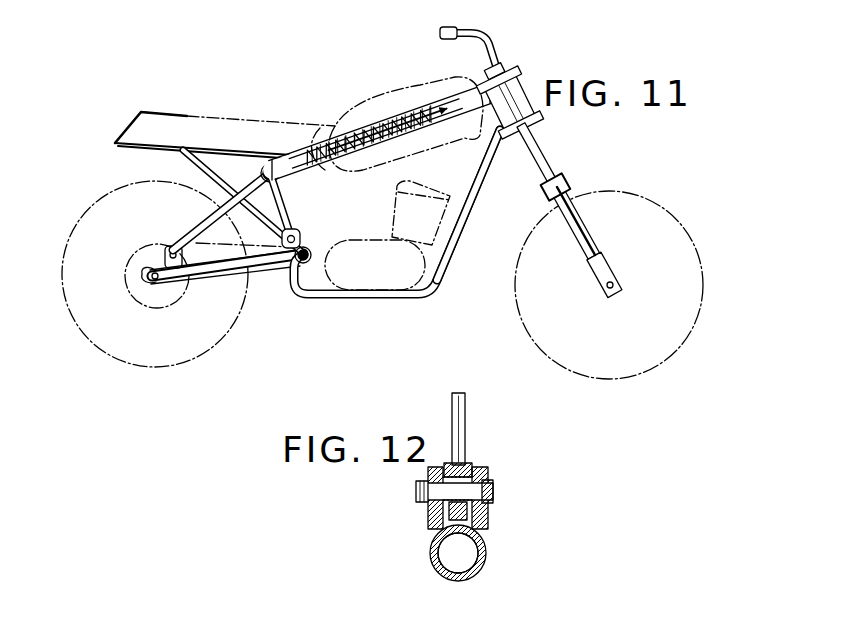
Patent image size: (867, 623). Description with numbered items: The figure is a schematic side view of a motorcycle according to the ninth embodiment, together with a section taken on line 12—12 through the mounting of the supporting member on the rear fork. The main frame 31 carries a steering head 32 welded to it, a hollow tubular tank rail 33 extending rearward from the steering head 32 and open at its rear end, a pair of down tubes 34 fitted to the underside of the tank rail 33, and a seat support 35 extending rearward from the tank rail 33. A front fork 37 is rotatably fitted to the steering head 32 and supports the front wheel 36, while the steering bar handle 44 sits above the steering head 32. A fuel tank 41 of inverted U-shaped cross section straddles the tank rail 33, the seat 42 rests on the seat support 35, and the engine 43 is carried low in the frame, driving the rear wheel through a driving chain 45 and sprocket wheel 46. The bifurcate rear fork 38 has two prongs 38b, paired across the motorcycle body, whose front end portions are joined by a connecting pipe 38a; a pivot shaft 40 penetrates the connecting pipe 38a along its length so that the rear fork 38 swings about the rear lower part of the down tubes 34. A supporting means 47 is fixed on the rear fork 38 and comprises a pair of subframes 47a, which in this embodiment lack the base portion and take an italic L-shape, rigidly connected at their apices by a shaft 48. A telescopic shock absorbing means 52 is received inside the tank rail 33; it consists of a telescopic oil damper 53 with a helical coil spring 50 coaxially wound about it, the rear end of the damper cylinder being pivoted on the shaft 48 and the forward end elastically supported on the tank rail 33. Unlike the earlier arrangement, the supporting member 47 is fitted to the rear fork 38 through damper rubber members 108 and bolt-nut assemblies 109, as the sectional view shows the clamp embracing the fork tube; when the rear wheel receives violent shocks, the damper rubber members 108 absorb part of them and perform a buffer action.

In FIG. 11, the frame 12 is at (172, 240).
In FIG. 11, the main frame 31 is at (436, 286).
In FIG. 11, the steering head 32 is at (512, 136).
In FIG. 11, the tank rail 33 is at (457, 108).
In FIG. 11, the down tubes 34 is at (451, 250).
In FIG. 11, the seat support 35 is at (160, 157).
In FIG. 11, the front wheel 36 is at (690, 335).
In FIG. 11, the front fork 37 is at (594, 239).
In FIG. 11, the rear fork 38 is at (224, 282).
In FIG. 12, the rear fork 38 is at (433, 543).
In FIG. 11, the connecting pipe 38a is at (311, 256).
In FIG. 11, the prongs 38b is at (262, 263).
In FIG. 12, the prongs 38b is at (478, 566).
In FIG. 11, the pivot shaft 40 is at (322, 233).
In FIG. 11, the fuel tank 41 is at (350, 133).
In FIG. 11, the seat 42 is at (192, 116).
In FIG. 11, the engine 43 is at (402, 290).
In FIG. 11, the steering bar handle 44 is at (492, 44).
In FIG. 11, the driving chain 45 is at (165, 306).
In FIG. 11, the sprocket wheel 46 is at (128, 280).
In FIG. 11, the supporting means 47 is at (207, 217).
In FIG. 12, the supporting means 47 is at (470, 448).
In FIG. 11, the triangular subframes 47a is at (288, 215).
In FIG. 12, the triangular subframes 47a is at (465, 425).
In FIG. 11, the shaft 48 is at (261, 172).
In FIG. 11, the helical coil spring 50 is at (392, 126).
In FIG. 11, the telescopic shock absorbing means 52 is at (414, 115).
In FIG. 11, the telescopic oil damper 53 is at (318, 142).
In FIG. 12, the damper rubber members 108 is at (490, 469).
In FIG. 12, the bolt-nut assemblies 109 is at (420, 504).